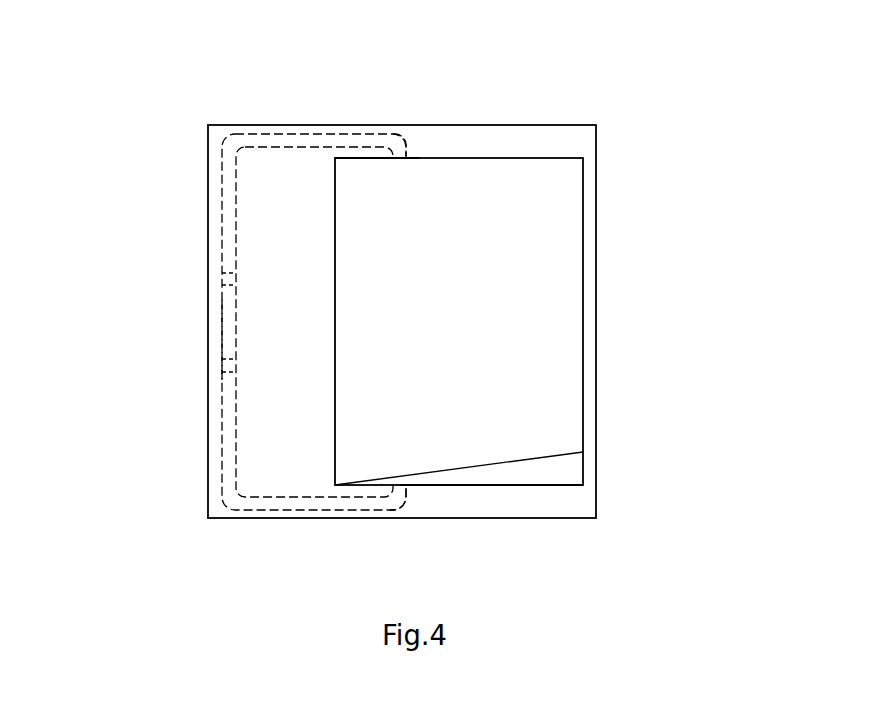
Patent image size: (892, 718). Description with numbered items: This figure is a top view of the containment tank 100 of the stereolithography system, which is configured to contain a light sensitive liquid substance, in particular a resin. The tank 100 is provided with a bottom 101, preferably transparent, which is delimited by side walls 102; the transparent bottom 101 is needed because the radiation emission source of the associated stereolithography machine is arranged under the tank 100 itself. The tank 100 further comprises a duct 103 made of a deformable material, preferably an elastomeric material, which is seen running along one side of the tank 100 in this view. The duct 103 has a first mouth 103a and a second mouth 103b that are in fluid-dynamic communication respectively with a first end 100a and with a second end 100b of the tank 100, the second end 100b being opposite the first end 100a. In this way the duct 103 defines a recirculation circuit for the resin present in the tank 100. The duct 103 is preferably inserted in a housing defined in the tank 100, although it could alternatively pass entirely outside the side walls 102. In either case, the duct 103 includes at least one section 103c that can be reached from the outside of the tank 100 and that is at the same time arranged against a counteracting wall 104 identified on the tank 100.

The tank 100 is at (660, 78).
The first end 100a is at (366, 158).
The second end 100b is at (443, 487).
The bottom 101 is at (543, 331).
The side walls 102 is at (533, 128).
The duct 103 is at (233, 143).
The first mouth 103a is at (398, 155).
The second mouth 103b is at (398, 490).
The section 103c is at (177, 336).
The counteracting wall 104 is at (230, 322).